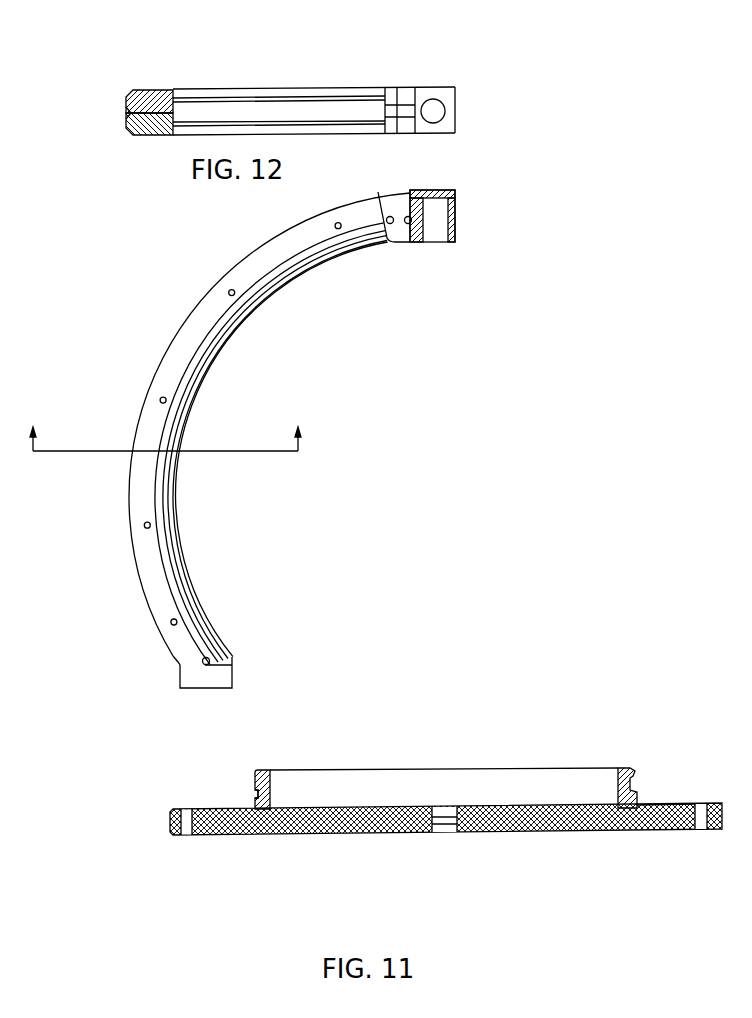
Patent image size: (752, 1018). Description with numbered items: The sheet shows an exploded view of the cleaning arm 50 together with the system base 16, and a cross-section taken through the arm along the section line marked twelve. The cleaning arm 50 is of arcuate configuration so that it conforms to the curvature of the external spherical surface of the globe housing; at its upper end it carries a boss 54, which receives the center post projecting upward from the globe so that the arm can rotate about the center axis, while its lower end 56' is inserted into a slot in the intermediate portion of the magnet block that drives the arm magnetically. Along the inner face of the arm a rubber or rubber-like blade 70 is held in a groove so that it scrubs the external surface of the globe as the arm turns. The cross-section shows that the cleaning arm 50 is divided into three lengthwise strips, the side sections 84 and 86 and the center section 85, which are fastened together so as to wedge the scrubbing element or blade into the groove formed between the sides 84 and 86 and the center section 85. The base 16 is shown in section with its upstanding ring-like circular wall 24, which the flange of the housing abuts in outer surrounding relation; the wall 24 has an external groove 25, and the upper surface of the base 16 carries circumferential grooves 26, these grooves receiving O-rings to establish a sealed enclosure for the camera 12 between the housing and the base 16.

In FIG. 11, the camera 12 is at (167, 423).
In FIG. 11, the system base 16 is at (170, 834).
In FIG. 11, the ring-like circular wall 24 is at (313, 793).
In FIG. 11, the external groove 25 is at (255, 797).
In FIG. 11, the circumferential grooves 26 is at (657, 810).
In FIG. 11, the cleaning arm 50 is at (175, 343).
In FIG. 12, the boss 54 is at (455, 115).
In FIG. 11, the boss 54 is at (455, 214).
In FIG. 11, the lower end of the cleaning arm 56' is at (249, 673).
In FIG. 11, the rubber blade 70 is at (223, 345).
In FIG. 12, the side section of the cleaning arm 84 is at (151, 90).
In FIG. 12, the center section of the cleaning arm 85 is at (127, 108).
In FIG. 12, the side section of the cleaning arm 86 is at (142, 136).